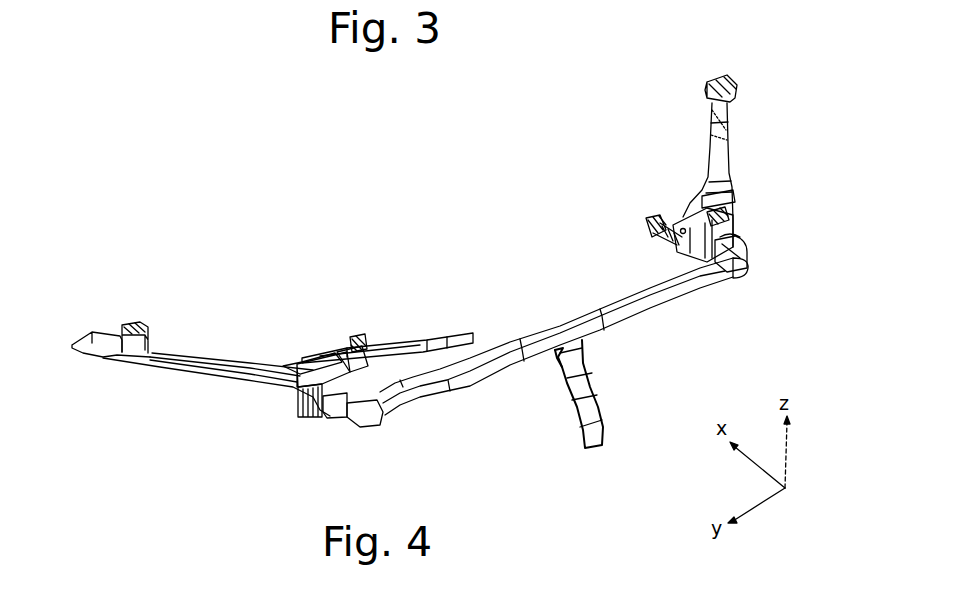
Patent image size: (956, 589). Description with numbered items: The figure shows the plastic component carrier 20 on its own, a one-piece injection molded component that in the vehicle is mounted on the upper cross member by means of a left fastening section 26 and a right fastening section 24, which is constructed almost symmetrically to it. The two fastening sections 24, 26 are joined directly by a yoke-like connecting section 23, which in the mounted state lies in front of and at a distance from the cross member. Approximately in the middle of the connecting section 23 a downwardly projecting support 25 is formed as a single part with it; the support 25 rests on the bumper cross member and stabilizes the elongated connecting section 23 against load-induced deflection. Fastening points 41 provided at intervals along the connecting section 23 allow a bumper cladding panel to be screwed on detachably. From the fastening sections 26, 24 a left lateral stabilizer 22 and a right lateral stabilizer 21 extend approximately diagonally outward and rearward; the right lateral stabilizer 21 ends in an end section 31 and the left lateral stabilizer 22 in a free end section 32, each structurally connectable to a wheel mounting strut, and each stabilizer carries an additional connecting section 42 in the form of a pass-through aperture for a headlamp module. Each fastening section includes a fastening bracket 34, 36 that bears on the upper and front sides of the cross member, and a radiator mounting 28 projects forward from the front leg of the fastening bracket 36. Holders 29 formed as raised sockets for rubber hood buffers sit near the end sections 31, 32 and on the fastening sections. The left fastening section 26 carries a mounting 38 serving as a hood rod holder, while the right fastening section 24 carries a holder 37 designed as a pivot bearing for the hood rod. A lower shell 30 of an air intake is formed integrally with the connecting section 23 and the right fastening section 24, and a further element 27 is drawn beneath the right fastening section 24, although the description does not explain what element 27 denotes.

The plastic component carrier 20 is at (510, 315).
The right lateral stabilizer 21 is at (210, 358).
The left lateral stabilizer 22 is at (720, 157).
The connecting section 23 is at (562, 326).
The right fastening section 24 is at (288, 350).
The support 25 is at (587, 390).
The left fastening section 26 is at (686, 192).
The mounting bracket 27 is at (380, 419).
The radiator mounting 28 is at (718, 284).
The holder 29 is at (135, 325).
The lower shell 30 is at (435, 343).
The end section 31 is at (90, 340).
The free end section 32 is at (727, 75).
The fastening bracket 34 is at (337, 350).
The fastening bracket 36 is at (678, 226).
The holder 37 is at (356, 338).
The mounting 38 is at (648, 220).
The fastening point 41 is at (342, 415).
The additional connecting section 42 is at (283, 368).